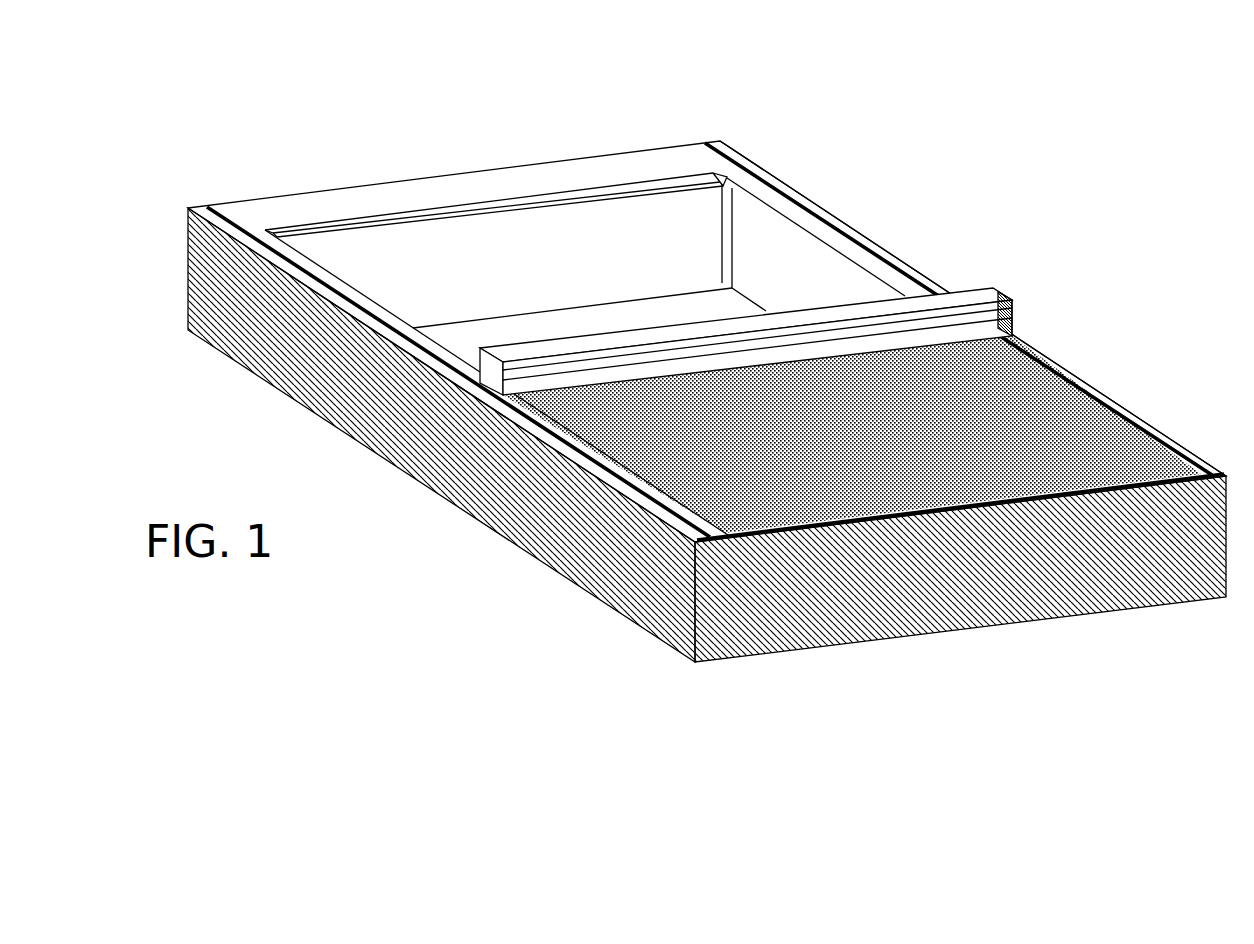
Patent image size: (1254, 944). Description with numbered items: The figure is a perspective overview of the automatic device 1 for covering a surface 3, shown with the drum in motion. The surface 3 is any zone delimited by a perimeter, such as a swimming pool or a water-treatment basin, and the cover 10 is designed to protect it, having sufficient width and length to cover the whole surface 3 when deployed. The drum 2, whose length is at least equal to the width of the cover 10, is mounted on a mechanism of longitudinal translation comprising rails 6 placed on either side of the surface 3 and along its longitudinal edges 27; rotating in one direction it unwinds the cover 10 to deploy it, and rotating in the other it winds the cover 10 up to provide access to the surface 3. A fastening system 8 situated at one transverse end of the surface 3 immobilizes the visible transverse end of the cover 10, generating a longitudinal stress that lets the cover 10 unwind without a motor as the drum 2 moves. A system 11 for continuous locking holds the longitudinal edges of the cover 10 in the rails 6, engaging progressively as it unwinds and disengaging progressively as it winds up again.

The automatic device 1 is at (1060, 128).
The drum 2 is at (982, 297).
The surface 3 is at (473, 262).
The rails 6 is at (252, 228).
The fastening system 8 is at (1112, 483).
The cover 10 is at (1030, 440).
The continuous locking system 11 is at (1013, 296).
The longitudinal edges 27 is at (719, 141).